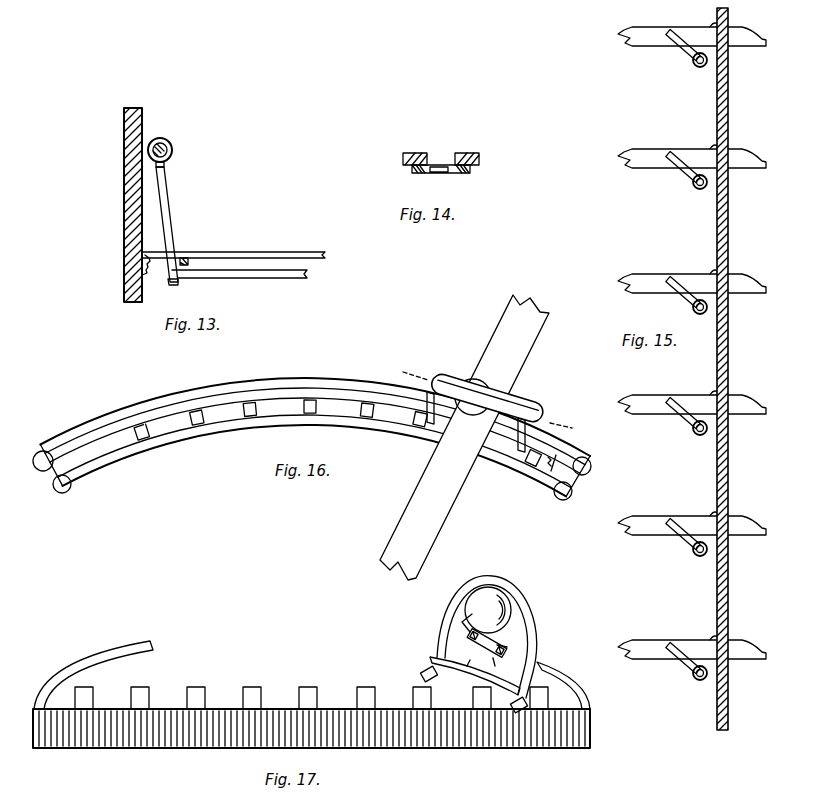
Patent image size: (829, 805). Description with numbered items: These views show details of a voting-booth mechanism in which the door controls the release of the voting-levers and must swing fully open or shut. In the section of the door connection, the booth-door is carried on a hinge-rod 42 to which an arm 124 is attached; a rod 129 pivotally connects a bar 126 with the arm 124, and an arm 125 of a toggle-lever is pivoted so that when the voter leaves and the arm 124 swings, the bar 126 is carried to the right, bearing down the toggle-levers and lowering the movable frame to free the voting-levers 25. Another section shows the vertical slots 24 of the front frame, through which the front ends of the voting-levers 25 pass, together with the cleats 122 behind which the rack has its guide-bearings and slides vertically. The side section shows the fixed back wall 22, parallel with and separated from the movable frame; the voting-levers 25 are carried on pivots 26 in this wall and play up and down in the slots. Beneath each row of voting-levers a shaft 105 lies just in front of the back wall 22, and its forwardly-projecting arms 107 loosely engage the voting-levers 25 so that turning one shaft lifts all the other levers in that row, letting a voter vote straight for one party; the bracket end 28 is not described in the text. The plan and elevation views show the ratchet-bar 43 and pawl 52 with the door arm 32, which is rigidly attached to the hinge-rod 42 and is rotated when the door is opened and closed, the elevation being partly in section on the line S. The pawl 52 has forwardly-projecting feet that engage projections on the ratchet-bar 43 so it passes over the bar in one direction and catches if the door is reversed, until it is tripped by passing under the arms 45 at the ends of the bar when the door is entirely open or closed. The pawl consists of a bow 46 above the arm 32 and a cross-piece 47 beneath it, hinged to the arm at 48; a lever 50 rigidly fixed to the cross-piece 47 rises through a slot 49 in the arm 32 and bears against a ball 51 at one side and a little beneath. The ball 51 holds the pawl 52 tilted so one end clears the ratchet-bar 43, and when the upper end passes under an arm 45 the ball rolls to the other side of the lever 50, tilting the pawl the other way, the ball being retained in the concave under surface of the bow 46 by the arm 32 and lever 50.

In FIG. 13, the hinge-rod 42 is at (169, 142).
In FIG. 13, the arm 124 is at (178, 186).
In FIG. 13, the toggle-lever arm 125 is at (186, 258).
In FIG. 13, the bar 126 is at (310, 252).
In FIG. 13, the rod 129 is at (240, 286).
In FIG. 14, the vertical slots 24 is at (437, 156).
In FIG. 14, the cleats 122 is at (410, 170).
In FIG. 15, the back wall 22 is at (728, 465).
In FIG. 15, the voting-levers 25 is at (666, 147).
In FIG. 15, the pivots 26 is at (712, 150).
In FIG. 15, the bracket end 28 is at (753, 161).
In FIG. 15, the shaft 105 is at (690, 310).
In FIG. 15, the forwardly-projecting arms 107 is at (682, 354).
In FIG. 16, the bar 32 is at (470, 458).
In FIG. 17, the bar 32 is at (477, 633).
In FIG. 16, the ratchet-bar 43 is at (315, 437).
In FIG. 17, the ratchet-bar 43 is at (276, 706).
In FIG. 16, the arms 45 is at (312, 470).
In FIG. 17, the arms 45 is at (95, 651).
In FIG. 16, the bow 46 is at (518, 408).
In FIG. 17, the bow 46 is at (498, 580).
In FIG. 16, the ball 51 is at (486, 380).
In FIG. 17, the ball 51 is at (488, 610).
In FIG. 16, the pawl 52 is at (498, 422).
In FIG. 17, the pawl 52 is at (470, 674).
In FIG. 16, the section line s s S is at (490, 396).
In FIG. 17, the lever 50 is at (505, 640).
In FIG. 17, the cross-piece 47 is at (466, 672).
In FIG. 17, the pivot 48 is at (494, 673).
In FIG. 17, the slot 49 is at (460, 664).